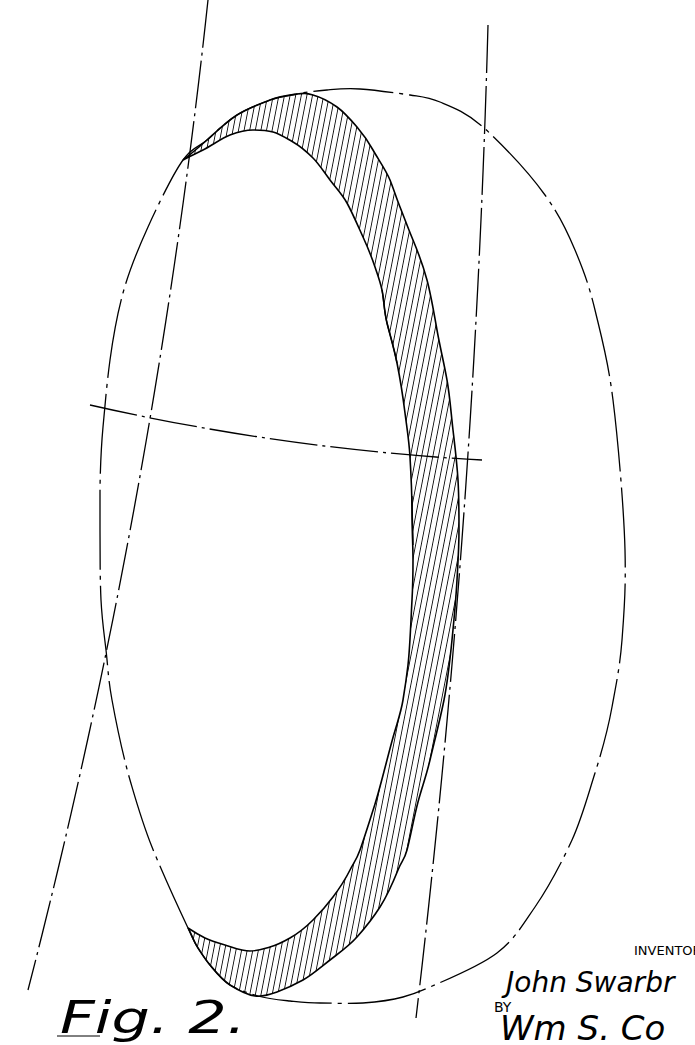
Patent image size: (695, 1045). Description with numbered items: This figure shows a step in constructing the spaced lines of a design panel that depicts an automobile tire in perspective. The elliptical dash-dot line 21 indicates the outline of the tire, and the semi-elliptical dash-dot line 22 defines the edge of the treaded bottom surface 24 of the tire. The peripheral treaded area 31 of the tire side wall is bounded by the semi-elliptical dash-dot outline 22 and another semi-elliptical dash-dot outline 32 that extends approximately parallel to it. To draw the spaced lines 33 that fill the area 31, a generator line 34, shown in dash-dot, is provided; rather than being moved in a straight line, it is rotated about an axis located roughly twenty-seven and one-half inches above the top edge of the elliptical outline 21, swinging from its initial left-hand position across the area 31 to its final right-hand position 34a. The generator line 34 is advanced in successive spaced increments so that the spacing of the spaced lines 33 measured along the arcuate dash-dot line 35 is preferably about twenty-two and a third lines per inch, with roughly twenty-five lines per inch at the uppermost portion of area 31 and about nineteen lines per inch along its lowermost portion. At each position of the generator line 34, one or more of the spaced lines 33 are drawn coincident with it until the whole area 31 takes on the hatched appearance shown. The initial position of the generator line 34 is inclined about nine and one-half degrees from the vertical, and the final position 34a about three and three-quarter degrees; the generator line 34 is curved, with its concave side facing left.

The elliptical dash-dot line 21 is at (622, 460).
The semi-elliptical dash-dot line 22 is at (422, 279).
The treaded bottom surface 24 is at (553, 615).
The peripheral treaded area 31 is at (412, 521).
The semi-elliptical dash-dot outline 32 is at (388, 330).
The spaced lines 33 is at (383, 237).
The generator line 34 is at (203, 42).
The final right-hand position of generator line 34a is at (487, 78).
The arcuate dash-dot line 35 is at (229, 433).